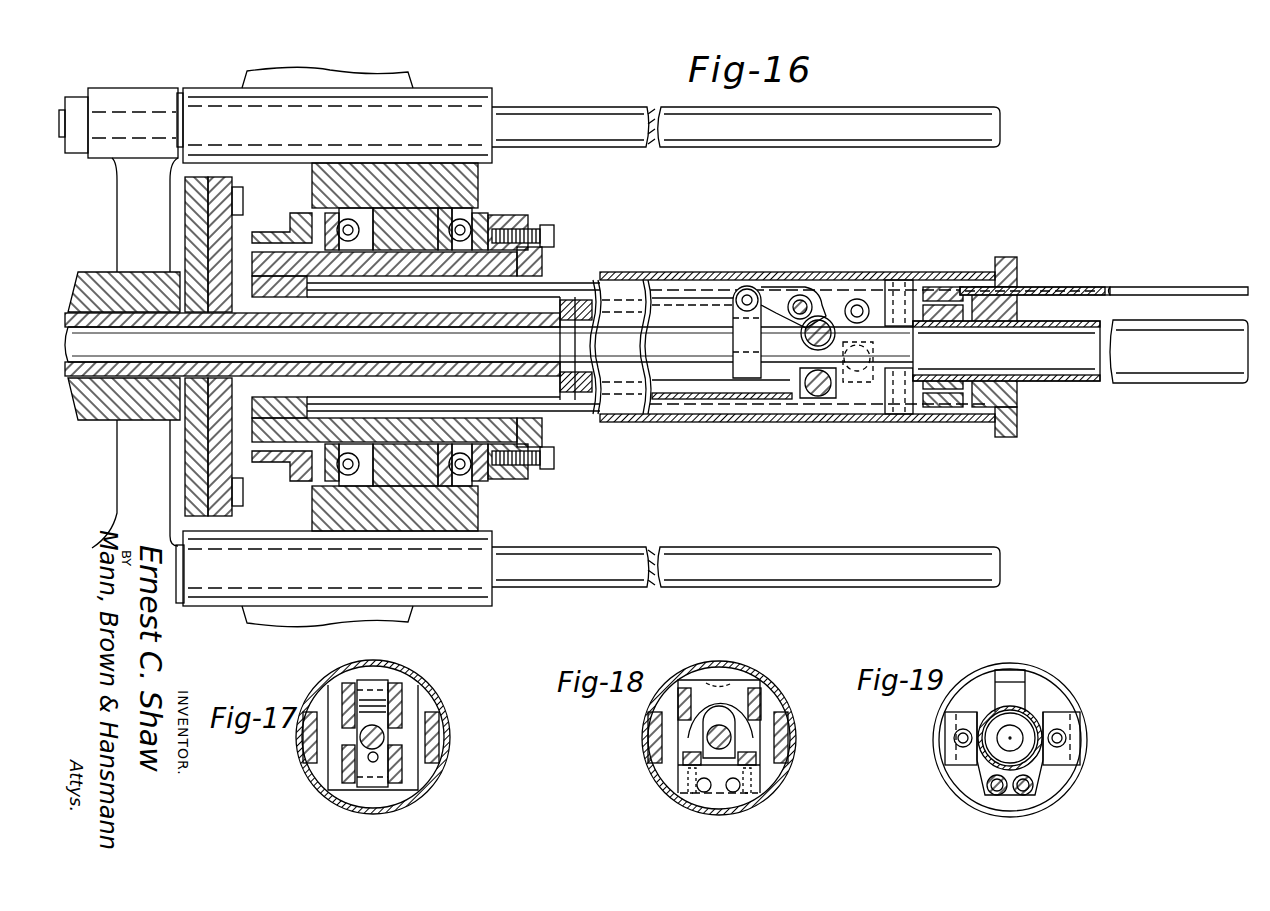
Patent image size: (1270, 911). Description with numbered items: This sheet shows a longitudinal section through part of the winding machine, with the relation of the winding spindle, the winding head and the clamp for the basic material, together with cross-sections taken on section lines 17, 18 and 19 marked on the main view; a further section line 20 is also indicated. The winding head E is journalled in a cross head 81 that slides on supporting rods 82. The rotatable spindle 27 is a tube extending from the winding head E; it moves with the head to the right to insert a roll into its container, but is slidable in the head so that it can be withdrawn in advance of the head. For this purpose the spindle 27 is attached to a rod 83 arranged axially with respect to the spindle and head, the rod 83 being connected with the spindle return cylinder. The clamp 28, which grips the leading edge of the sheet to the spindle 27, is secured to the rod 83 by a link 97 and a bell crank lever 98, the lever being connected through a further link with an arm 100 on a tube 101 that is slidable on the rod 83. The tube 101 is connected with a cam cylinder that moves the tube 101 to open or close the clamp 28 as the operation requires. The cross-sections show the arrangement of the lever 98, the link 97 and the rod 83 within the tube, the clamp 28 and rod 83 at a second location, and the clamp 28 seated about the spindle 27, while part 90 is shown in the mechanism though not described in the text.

In FIG. 16, the section line 20— 20 is at (218, 43).
In FIG. 16, the supporting rods 82 is at (574, 99).
In FIG. 16, the cross head 81 is at (480, 184).
In FIG. 16, the winding head E is at (717, 266).
In FIG. 16, the lever arm 90 is at (781, 288).
In FIG. 17, the lever arm 90 is at (372, 680).
In FIG. 16, the bell crank lever 98 is at (832, 302).
In FIG. 17, the bell crank lever 98 is at (350, 684).
In FIG. 16, the tube 101 is at (340, 328).
In FIG. 16, the rod 83 is at (425, 344).
In FIG. 17, the rod 83 is at (400, 745).
In FIG. 18, the rod 83 is at (731, 737).
In FIG. 16, the arm 100 is at (735, 310).
In FIG. 16, the link 97 is at (836, 390).
In FIG. 17, the link 97 is at (345, 752).
In FIG. 16, the clamp 28 is at (1110, 293).
In FIG. 18, the clamp 28 is at (712, 680).
In FIG. 19, the clamp 28 is at (1010, 682).
In FIG. 16, the rotatable spindle 27 is at (1105, 386).
In FIG. 19, the rotatable spindle 27 is at (1013, 712).
In FIG. 16, the section line 17— 17 is at (866, 241).
In FIG. 16, the section line 18— 18 is at (882, 260).
In FIG. 16, the section line 19— 19 is at (1031, 272).